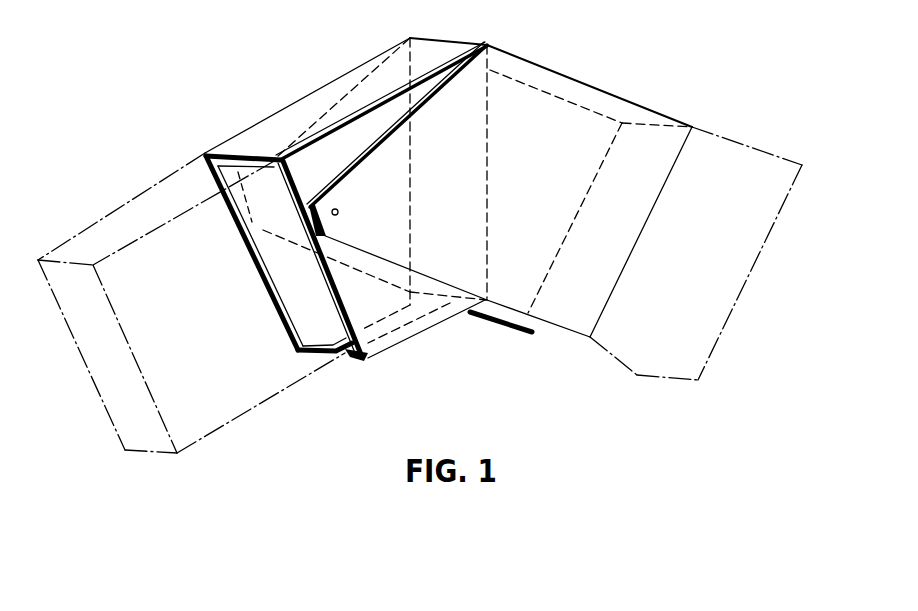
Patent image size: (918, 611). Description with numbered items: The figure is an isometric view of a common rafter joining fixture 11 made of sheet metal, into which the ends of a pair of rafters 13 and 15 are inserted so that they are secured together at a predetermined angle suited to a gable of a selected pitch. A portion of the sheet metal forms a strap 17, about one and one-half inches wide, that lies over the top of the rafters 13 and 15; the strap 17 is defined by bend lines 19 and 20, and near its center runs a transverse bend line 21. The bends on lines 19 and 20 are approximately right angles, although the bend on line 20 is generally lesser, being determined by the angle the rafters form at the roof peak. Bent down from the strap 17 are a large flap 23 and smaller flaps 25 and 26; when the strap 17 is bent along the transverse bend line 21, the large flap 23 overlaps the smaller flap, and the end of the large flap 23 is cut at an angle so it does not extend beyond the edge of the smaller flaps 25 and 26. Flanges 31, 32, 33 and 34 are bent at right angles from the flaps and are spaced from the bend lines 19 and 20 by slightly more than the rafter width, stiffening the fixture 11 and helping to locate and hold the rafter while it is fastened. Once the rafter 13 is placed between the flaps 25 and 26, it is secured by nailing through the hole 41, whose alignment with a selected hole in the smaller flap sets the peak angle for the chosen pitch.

The common rafter joining fixture 11 is at (533, 62).
The rafter 13 is at (143, 196).
The rafter 15 is at (747, 143).
The strap 17 is at (237, 143).
The bend line 19 is at (305, 88).
The bend line 20 is at (617, 95).
The transverse bend line 21 is at (425, 37).
The large flap 23 is at (450, 182).
The smaller flap 25 is at (355, 283).
The smaller flap 26 is at (282, 263).
The flange 31 is at (550, 327).
The flange 32 is at (533, 340).
The flange 33 is at (353, 358).
The flange 34 is at (313, 355).
The hole 41 is at (390, 207).